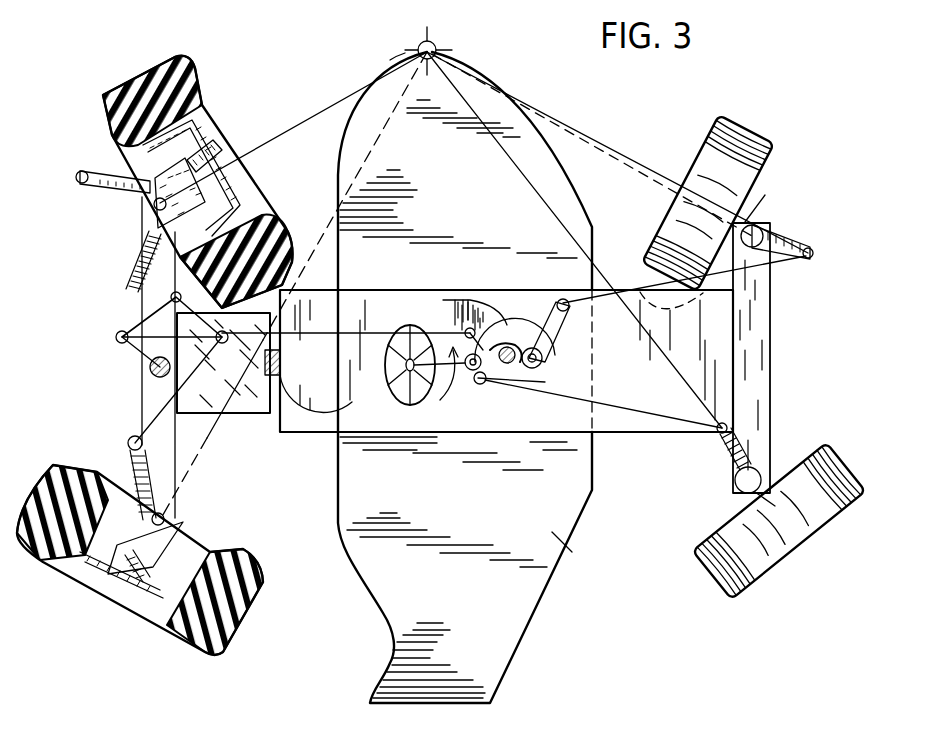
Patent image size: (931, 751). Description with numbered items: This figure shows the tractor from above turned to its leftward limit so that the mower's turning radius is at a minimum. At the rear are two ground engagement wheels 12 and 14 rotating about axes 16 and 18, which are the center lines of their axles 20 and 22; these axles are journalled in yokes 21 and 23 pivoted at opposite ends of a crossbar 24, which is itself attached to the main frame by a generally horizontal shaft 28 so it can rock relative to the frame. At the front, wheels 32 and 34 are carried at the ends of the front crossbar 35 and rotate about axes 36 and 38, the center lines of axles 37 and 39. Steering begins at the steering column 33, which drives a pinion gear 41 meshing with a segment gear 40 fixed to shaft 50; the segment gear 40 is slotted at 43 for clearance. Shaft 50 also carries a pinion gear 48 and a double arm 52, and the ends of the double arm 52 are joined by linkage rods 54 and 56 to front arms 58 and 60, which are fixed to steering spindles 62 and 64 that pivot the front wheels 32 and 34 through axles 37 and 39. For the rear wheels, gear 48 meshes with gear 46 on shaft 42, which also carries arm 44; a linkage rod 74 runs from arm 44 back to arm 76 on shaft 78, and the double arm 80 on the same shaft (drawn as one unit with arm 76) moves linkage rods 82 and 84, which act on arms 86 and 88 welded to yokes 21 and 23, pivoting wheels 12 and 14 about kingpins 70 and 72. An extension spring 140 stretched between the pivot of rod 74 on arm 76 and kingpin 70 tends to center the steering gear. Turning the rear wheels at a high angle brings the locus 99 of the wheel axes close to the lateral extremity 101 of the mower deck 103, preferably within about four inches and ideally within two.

The rear ground engagement wheel 12 is at (195, 68).
The rear ground engagement wheel 14 is at (165, 615).
The axis 16 is at (322, 112).
The axis 18 is at (380, 140).
The axle 20 is at (240, 188).
The yoke 21 is at (191, 178).
The axle 22 is at (122, 622).
The yoke 23 is at (185, 548).
The crossbar 24 is at (193, 462).
The shaft 28 is at (358, 375).
The front ground engagement wheel 32 is at (716, 120).
The steering column 33 is at (430, 398).
The front ground engagement wheel 34 is at (785, 568).
The front crossbar 35 is at (770, 388).
The axis 36 is at (617, 158).
The axle 37 is at (765, 195).
The axis 38 is at (548, 116).
The axle 39 is at (745, 497).
The segment gear 40 is at (470, 300).
The pinion gear 41 is at (470, 392).
The shaft 42 is at (500, 378).
The slot 43 is at (560, 299).
The arm 44 is at (447, 300).
The gear 46 is at (505, 342).
The pinion gear 48 is at (542, 362).
The shaft 50 is at (535, 375).
The double arm 52 is at (684, 310).
The linkage rod 54 is at (648, 302).
The linkage rod 56 is at (645, 410).
The front arm 58 is at (812, 250).
The front arm 60 is at (755, 455).
The steering spindle 62 is at (764, 228).
The steering spindle 64 is at (737, 482).
The kingpin 70 is at (152, 205).
The kingpin 72 is at (166, 517).
The linkage rod 74 is at (350, 330).
The arm 76 is at (118, 342).
The shaft 78 is at (150, 367).
The double arm 80 is at (120, 344).
The linkage rod 82 is at (130, 236).
The linkage rod 84 is at (150, 418).
The arm 86 is at (108, 168).
The arm 88 is at (130, 460).
The locus of the axes of the tractor wheels 99 is at (437, 47).
The lateral extremity 101 is at (405, 53).
The mower deck 103 is at (560, 540).
The spring 140 is at (128, 288).